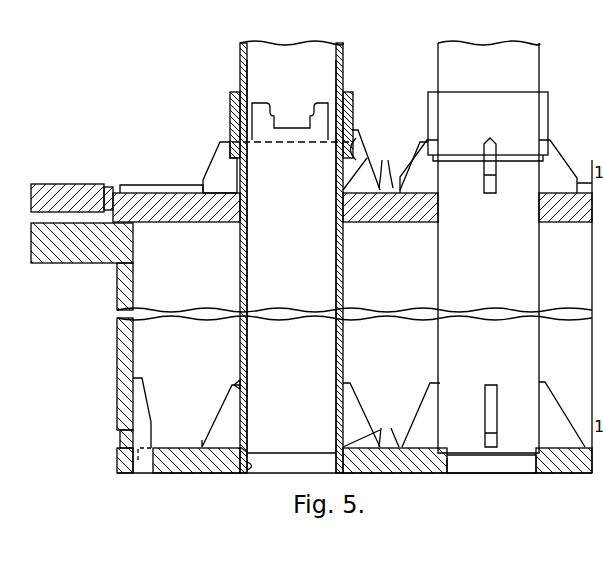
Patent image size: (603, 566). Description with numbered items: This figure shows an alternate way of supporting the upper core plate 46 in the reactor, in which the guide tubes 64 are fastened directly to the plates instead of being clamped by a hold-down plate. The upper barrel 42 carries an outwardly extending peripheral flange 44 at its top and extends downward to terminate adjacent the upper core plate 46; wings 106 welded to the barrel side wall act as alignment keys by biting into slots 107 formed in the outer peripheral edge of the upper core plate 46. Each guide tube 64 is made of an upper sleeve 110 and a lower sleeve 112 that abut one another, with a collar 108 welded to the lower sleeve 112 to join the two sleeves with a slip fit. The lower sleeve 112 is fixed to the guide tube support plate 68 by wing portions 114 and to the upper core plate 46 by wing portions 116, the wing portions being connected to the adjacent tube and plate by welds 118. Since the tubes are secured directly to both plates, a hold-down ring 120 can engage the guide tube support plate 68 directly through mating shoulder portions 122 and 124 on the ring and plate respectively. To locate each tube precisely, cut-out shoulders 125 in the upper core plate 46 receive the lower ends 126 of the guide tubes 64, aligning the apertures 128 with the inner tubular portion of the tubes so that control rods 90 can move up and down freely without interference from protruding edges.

The upper barrel 42 is at (117, 357).
The peripheral flange 44 is at (68, 262).
The upper core plate 46 is at (410, 462).
The guide tube 64 is at (343, 60).
The guide tube support plate 68 is at (393, 223).
The control rod 90 is at (310, 128).
The wing 106 is at (147, 404).
The slot 107 is at (157, 452).
The collar 108 is at (361, 91).
The upper sleeve 110 is at (243, 84).
The lower sleeve 112 is at (249, 180).
The wing portion 114 is at (213, 165).
The wing portion 116 is at (226, 410).
The weld 118 is at (362, 150).
The hold-down ring 120 is at (80, 183).
The shoulder portion 122 is at (110, 187).
The shoulder portion 124 is at (127, 190).
The cut-out shoulder 125 is at (249, 452).
The lower end 126 is at (302, 456).
The aperture 128 is at (249, 470).